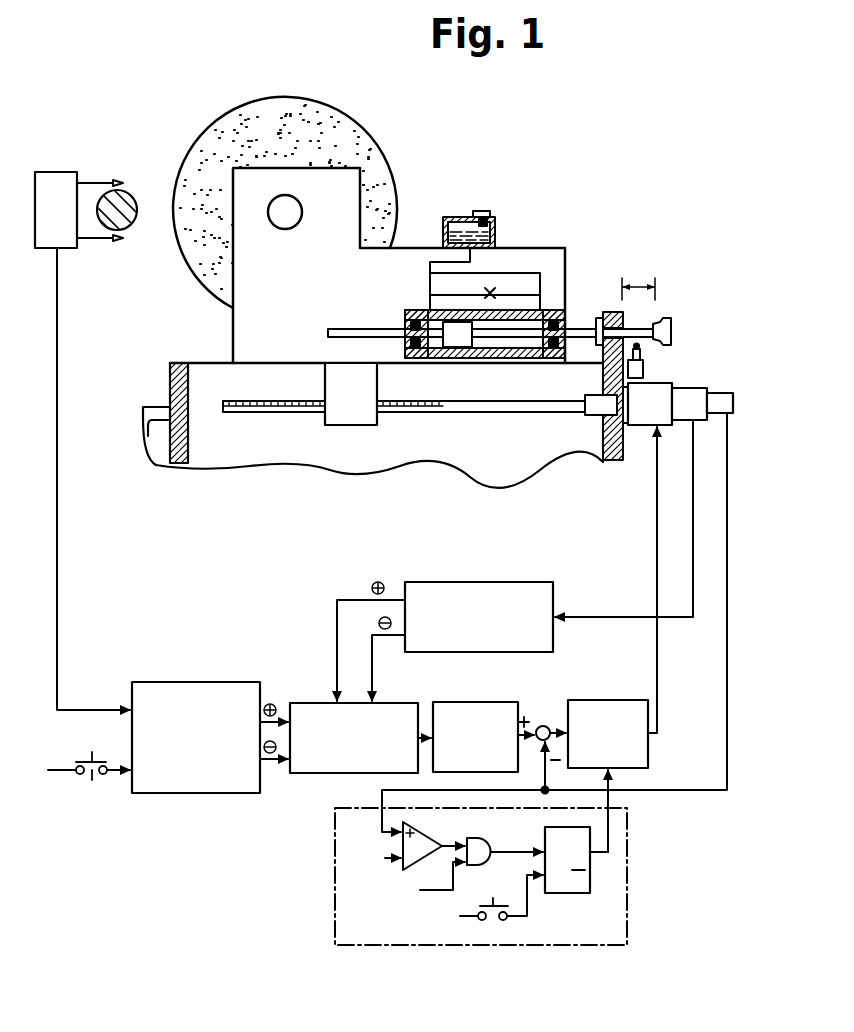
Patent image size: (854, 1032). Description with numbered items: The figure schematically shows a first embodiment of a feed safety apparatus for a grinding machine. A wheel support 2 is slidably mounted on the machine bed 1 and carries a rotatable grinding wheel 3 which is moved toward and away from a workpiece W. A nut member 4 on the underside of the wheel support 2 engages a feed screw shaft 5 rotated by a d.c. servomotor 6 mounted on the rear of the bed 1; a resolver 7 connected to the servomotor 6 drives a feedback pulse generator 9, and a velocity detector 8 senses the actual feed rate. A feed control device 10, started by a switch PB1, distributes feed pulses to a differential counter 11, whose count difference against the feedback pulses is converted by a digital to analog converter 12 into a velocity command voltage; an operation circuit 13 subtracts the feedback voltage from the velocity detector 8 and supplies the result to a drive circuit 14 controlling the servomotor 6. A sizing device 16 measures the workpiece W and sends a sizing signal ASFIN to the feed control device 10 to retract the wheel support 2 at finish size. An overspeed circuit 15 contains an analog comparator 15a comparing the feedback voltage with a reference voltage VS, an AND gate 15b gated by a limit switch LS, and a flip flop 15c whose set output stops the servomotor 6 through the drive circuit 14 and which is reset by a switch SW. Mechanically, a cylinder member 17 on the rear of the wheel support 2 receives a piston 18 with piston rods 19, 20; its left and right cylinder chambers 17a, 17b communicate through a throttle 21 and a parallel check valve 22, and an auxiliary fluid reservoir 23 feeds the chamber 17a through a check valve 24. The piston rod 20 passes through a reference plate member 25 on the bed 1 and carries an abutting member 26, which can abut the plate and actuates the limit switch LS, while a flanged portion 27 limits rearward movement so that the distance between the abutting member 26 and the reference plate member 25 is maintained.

The machine bed 1 is at (170, 365).
The wheel support 2 is at (233, 335).
The grinding wheel 3 is at (374, 143).
The nut member 4 is at (352, 425).
The feed screw shaft 5 is at (470, 412).
The d.c. servomotor 6 is at (647, 427).
The resolver 7 is at (682, 421).
The velocity detector 8 is at (720, 393).
The feedback pulse generator 9 is at (553, 598).
The feed control device 10 is at (205, 682).
The differential counter 11 is at (296, 703).
The digital to analog converter 12 is at (488, 702).
The operation circuit 13 is at (543, 726).
The drive circuit 14 is at (614, 700).
The circuit 15 is at (335, 885).
The analog comparator 15a is at (444, 822).
The AND gate 15b is at (481, 840).
The flip flop 15c is at (583, 893).
The sizing device 16 is at (60, 172).
The cylinder member 17 is at (408, 313).
The left cylinder chamber 17a is at (437, 358).
The right cylinder chamber 17b is at (521, 355).
The piston 18 is at (465, 348).
The piston rod 19 is at (345, 329).
The piston rod 20 is at (598, 318).
The fluid flow regulating mechanism 21 is at (494, 290).
The check valve 22 is at (487, 272).
The auxiliary fluid reservoir 23 is at (458, 217).
The check valve 24 is at (448, 260).
The reference plate member 25 is at (627, 280).
The abutting member 26 is at (671, 326).
The flanged portion 27 is at (612, 312).
The workpiece W is at (135, 198).
The limit switch LS is at (643, 368).
The switch PB1 is at (92, 787).
The sizing signal ASFIN is at (83, 728).
The reference voltage VS is at (363, 858).
The switch SW is at (493, 906).